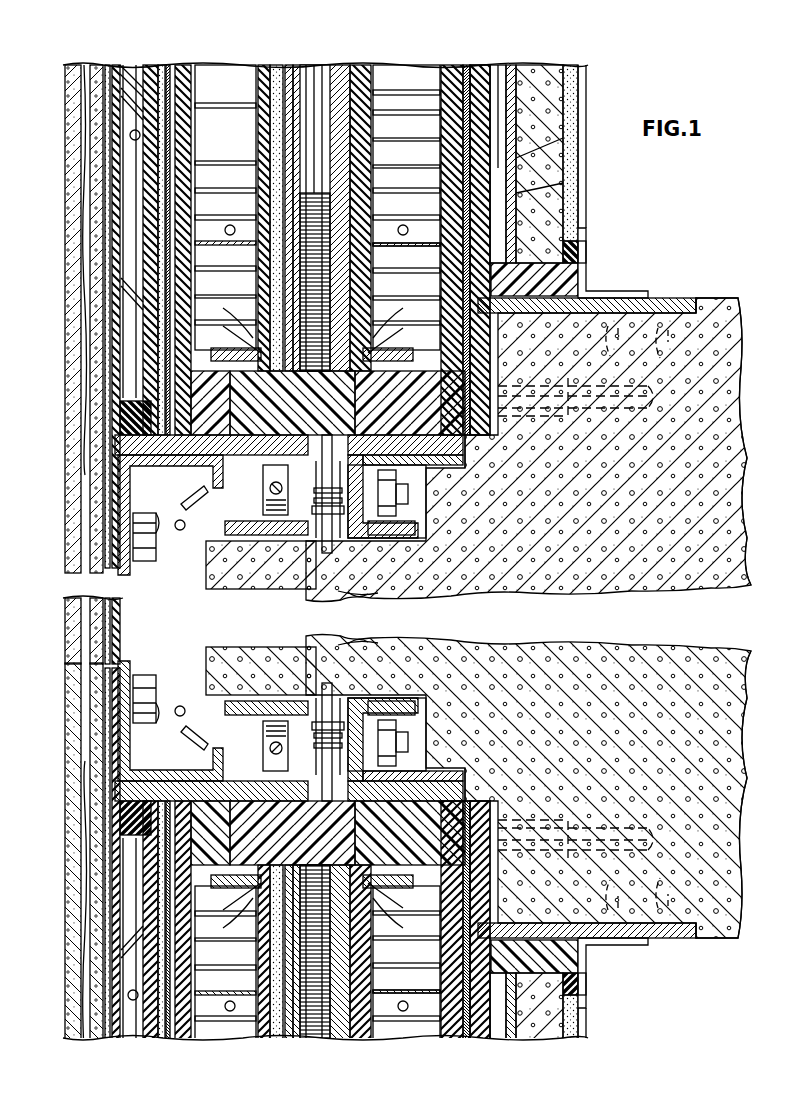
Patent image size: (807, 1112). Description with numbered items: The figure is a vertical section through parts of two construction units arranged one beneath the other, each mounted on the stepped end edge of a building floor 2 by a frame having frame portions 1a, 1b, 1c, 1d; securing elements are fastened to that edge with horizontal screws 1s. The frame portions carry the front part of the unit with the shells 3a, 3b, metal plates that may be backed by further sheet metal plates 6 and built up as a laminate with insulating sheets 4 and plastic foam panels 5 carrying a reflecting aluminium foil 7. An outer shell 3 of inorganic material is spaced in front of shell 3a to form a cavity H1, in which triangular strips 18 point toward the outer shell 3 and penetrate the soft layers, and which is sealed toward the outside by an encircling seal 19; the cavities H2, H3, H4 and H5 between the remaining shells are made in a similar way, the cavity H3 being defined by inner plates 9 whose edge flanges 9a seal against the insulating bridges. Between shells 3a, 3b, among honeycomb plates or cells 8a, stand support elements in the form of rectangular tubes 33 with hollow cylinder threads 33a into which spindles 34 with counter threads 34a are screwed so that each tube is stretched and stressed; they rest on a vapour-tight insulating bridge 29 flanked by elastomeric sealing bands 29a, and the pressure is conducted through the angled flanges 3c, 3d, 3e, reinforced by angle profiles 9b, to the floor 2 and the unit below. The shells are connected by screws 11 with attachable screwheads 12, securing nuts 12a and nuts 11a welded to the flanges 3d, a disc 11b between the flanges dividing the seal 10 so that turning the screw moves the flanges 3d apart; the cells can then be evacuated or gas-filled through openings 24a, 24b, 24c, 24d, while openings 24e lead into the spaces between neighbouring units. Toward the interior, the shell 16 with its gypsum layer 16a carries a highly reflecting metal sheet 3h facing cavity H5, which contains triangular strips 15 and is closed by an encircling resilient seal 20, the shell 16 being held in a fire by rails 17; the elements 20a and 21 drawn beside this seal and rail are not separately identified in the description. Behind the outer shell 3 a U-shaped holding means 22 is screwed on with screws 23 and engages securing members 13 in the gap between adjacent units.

The frame portion 1a is at (660, 935).
The frame portion 1b is at (489, 880).
The frame portion 1c is at (464, 760).
The frame portion 1d is at (400, 652).
The horizontal screws 1s is at (555, 810).
The building floor 2 is at (715, 933).
The outer shell 3 is at (72, 40).
The shell 3a is at (150, 58).
The shell 3b is at (472, 1064).
The shell angled portion 3c is at (350, 798).
The flange 3d is at (388, 755).
The angled flange 3e is at (403, 670).
The highly reflecting metal sheet 3h is at (520, 1038).
The insulating sheets 4 is at (460, 36).
The plastic foam panels 5 is at (492, 364).
The sheet metal plates 6 is at (460, 50).
The reflecting foil 7 is at (432, 146).
The honeycomb plates 8a is at (316, 110).
The inner plate 9 is at (260, 930).
The encircling flanges 9a is at (316, 612).
The angle profiles 9b is at (313, 618).
The seal 10 is at (317, 540).
The screw 11 is at (400, 735).
The nut 11a is at (403, 705).
The disc 11b is at (356, 619).
The screwhead 12 is at (260, 725).
The securing nut 12a is at (208, 618).
The securing member 13 is at (255, 760).
The triangular strips 15 is at (555, 133).
The interior shell 16 is at (548, 1030).
The gypsum layer 16a is at (582, 1057).
The rail 17 is at (576, 963).
The triangular strips 18 is at (122, 928).
The encircling seal 19 is at (135, 618).
The encircling resilient seal 20 is at (570, 958).
The angle plate flange 20a is at (581, 975).
The seal 21 is at (570, 1008).
The U-shaped holding means 22 is at (175, 762).
The screws 23 is at (147, 668).
The vent hole 24a is at (60, 127).
The vent hole 24b is at (226, 226).
The vent hole 24c is at (399, 226).
The vent hole 24d is at (557, 178).
The evacuating openings 24e is at (172, 522).
The insulating bridge 29 is at (292, 618).
The elastomeric sealing band 29a is at (210, 618).
The rectangular tube 33 is at (338, 56).
The hollow cylinder thread 33a is at (406, 592).
The spindle 34 is at (312, 60).
The counter thread 34a is at (310, 1020).
The cavity H1 is at (125, 195).
The cavity H2 is at (219, 620).
The cavity H3 is at (397, 283).
The cavity H4 is at (397, 630).
The cavity H5 is at (504, 62).